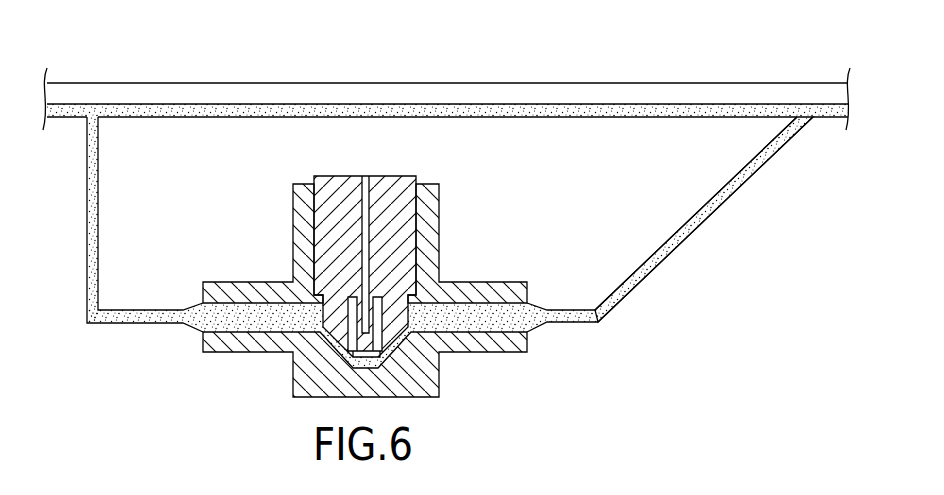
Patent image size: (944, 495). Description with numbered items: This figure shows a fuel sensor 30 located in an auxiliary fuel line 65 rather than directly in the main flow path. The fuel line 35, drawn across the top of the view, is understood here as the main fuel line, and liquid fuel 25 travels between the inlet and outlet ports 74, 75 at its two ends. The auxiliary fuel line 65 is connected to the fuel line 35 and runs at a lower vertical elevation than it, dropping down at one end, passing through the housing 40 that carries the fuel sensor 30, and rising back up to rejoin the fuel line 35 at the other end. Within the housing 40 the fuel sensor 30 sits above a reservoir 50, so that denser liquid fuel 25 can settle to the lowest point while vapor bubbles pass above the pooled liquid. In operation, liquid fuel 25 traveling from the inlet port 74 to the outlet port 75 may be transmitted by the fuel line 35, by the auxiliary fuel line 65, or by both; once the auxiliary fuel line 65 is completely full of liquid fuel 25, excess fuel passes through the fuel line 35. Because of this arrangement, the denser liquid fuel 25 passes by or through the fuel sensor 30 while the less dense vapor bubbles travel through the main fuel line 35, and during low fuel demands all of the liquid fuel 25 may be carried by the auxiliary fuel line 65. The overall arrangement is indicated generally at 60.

The liquid fuel 25 is at (608, 104).
The fuel sensor 30 is at (397, 176).
The fuel line 35 is at (450, 83).
The housing 40 is at (293, 220).
The reservoir 50 is at (345, 362).
The dispensing assembly 60 is at (482, 388).
The auxiliary fuel line 65 is at (658, 263).
The inlet port 74 is at (65, 83).
The outlet port 75 is at (828, 83).